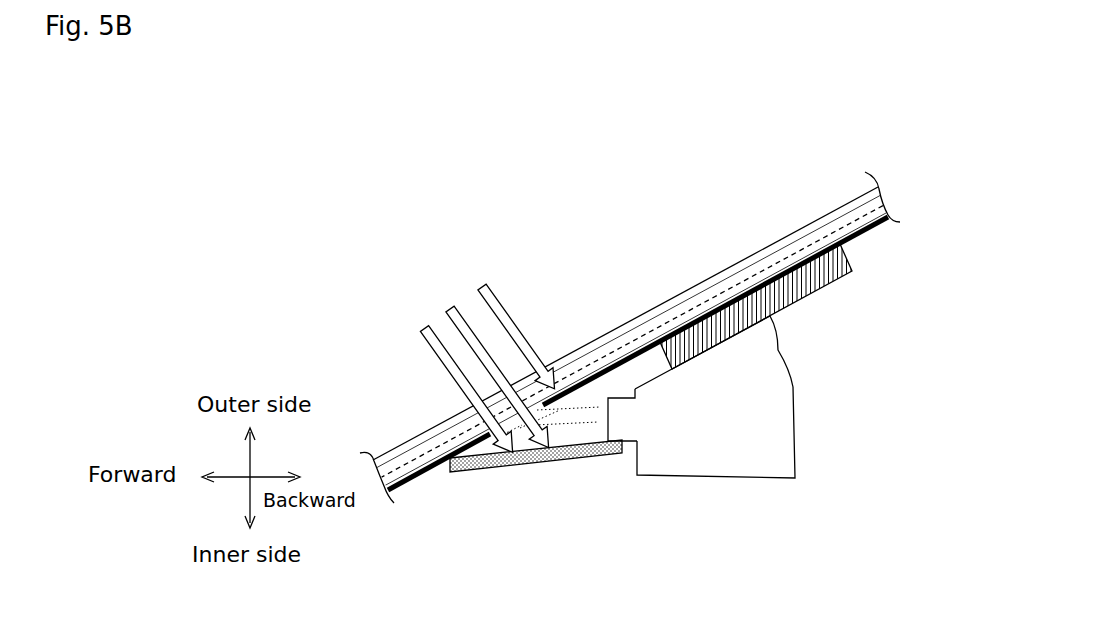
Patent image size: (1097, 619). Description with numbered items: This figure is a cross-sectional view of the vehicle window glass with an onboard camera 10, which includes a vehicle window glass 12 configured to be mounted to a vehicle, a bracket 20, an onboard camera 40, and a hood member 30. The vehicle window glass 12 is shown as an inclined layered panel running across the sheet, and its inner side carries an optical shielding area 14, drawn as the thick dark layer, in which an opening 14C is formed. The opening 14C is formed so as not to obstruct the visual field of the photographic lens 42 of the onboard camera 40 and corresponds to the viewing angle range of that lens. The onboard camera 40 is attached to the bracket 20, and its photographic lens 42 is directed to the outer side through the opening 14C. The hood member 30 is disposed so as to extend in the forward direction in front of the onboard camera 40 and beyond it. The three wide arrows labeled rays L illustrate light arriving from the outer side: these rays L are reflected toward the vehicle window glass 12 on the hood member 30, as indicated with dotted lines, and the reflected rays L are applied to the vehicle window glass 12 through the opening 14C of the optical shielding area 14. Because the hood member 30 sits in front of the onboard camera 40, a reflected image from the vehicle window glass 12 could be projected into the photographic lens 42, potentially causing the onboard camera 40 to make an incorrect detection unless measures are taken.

The vehicle window glass with an onboard camera 10 is at (841, 146).
The vehicle window glass 12 is at (658, 312).
The optical shielding area 14 is at (866, 231).
The opening 14C is at (490, 436).
The bracket 20 is at (813, 288).
The hood member 30 is at (487, 470).
The onboard camera 40 is at (796, 410).
The photographic lens 42 is at (630, 440).
The rays L is at (476, 270).